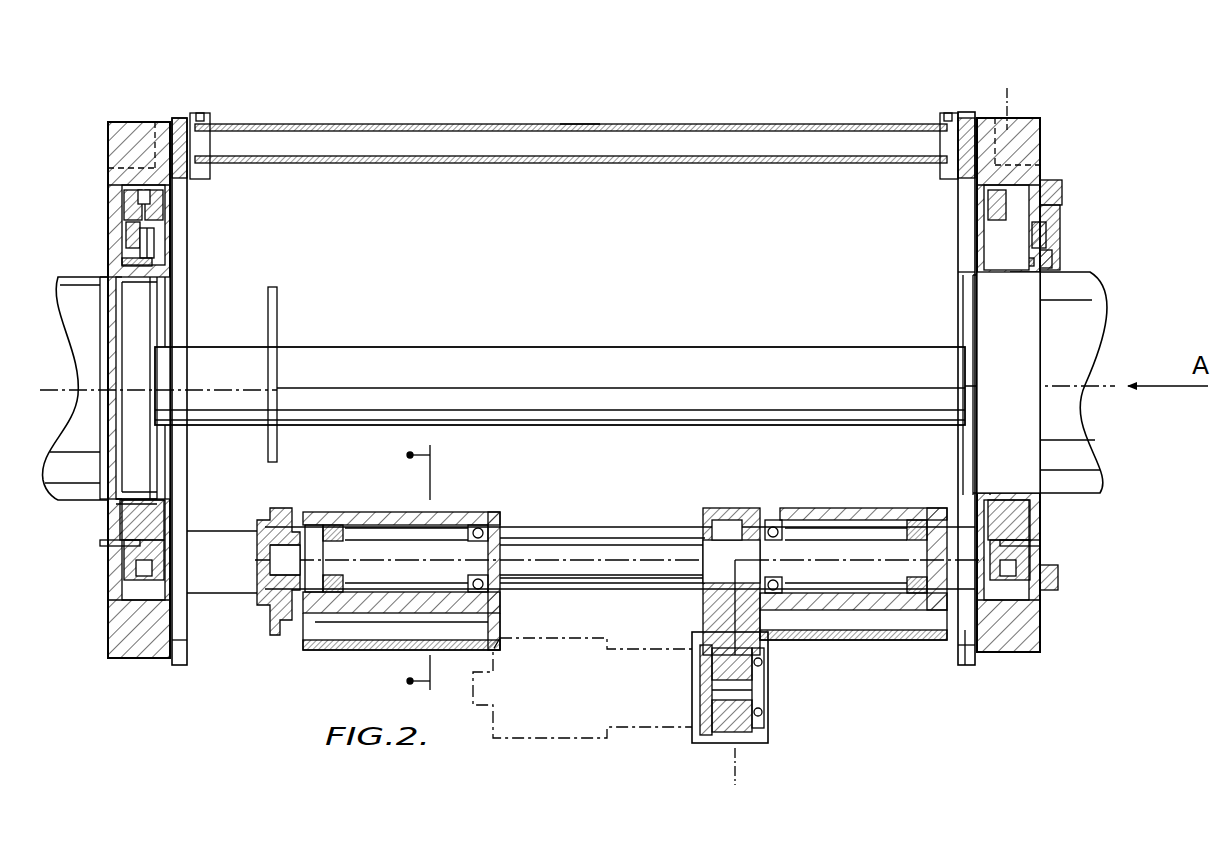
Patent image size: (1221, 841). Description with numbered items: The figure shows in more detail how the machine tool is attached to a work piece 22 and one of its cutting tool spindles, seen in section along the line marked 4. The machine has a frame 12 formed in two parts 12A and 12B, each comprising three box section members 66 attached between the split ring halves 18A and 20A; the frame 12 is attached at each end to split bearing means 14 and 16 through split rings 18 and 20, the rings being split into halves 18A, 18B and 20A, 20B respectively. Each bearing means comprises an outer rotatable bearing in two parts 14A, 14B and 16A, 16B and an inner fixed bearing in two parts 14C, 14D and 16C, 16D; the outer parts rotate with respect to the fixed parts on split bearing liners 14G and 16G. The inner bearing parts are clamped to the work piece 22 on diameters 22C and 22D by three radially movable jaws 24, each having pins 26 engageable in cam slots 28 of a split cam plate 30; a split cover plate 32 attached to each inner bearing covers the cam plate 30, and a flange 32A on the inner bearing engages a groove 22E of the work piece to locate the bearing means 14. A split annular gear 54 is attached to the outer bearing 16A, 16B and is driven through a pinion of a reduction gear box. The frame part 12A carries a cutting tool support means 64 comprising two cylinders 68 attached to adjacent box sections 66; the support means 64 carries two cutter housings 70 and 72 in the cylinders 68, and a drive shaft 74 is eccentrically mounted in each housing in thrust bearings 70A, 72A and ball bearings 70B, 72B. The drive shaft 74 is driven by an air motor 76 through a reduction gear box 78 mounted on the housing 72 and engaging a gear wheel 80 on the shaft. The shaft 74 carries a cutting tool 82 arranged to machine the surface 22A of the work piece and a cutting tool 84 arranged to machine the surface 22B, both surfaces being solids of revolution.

The section line 4 is at (870, 436).
The frame 12 is at (537, 103).
The frame part 12A is at (232, 550).
The frame part 12B is at (577, 123).
The split bearing means 14 is at (143, 105).
The outer rotatable bearing part 14A is at (130, 640).
The outer rotatable bearing part 14B is at (108, 150).
The inner fixed bearing part 14C is at (165, 214).
The inner fixed bearing part 14D is at (126, 586).
The split bearing liner 14G is at (128, 218).
The split bearing means 16 is at (1036, 112).
The outer rotatable bearing part 16A is at (1036, 642).
The outer rotatable bearing part 16B is at (1040, 167).
The inner fixed bearing part 16C is at (1060, 226).
The inner fixed bearing part 16D is at (1040, 626).
The split bearing liner 16G is at (988, 210).
The split ring 18 is at (194, 648).
The split ring half 18A is at (181, 665).
The split ring half 18B is at (184, 118).
The split ring 20 is at (980, 667).
The split ring half 20A is at (958, 657).
The split ring half 20B is at (960, 120).
The work piece 22 is at (835, 347).
The surface 22A is at (277, 290).
The surface 22B is at (963, 272).
The diameter 22C is at (1090, 312).
The diameter 22D is at (165, 302).
The groove 22E is at (155, 324).
The radially movable jaw 24 is at (150, 248).
The pin 26 is at (115, 264).
The cam slot 28 is at (1055, 260).
The split cam plate 30 is at (135, 242).
The split cover plate 32 is at (115, 534).
The flange 32A is at (140, 497).
The split annular gear 54 is at (1062, 194).
The cutting tool support means 64 is at (752, 494).
The box section member 66 is at (680, 124).
The cylinder 68 is at (447, 510).
The cutter housing 70 is at (402, 514).
The thrust bearing 70A is at (335, 528).
The ball bearing 70B is at (477, 526).
The cutter housing 72 is at (855, 510).
The thrust bearing 72A is at (920, 520).
The ball bearing 72B is at (776, 520).
The drive shaft 74 is at (608, 552).
The air motor 76 is at (548, 738).
The reduction gear box 78 is at (768, 678).
The gear wheel 80 is at (708, 606).
The cutting tool 82 is at (270, 635).
The cutting tool 84 is at (969, 662).